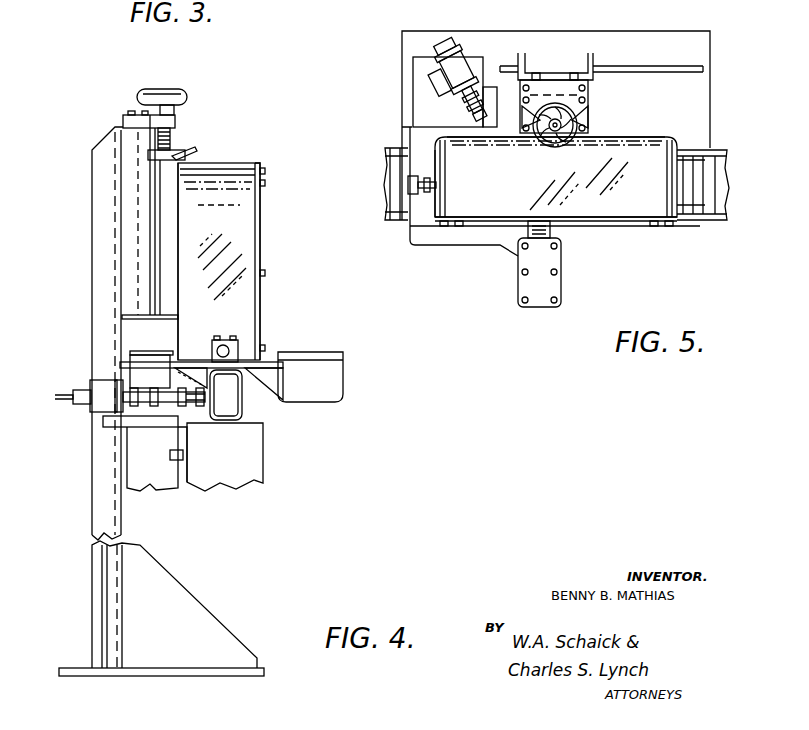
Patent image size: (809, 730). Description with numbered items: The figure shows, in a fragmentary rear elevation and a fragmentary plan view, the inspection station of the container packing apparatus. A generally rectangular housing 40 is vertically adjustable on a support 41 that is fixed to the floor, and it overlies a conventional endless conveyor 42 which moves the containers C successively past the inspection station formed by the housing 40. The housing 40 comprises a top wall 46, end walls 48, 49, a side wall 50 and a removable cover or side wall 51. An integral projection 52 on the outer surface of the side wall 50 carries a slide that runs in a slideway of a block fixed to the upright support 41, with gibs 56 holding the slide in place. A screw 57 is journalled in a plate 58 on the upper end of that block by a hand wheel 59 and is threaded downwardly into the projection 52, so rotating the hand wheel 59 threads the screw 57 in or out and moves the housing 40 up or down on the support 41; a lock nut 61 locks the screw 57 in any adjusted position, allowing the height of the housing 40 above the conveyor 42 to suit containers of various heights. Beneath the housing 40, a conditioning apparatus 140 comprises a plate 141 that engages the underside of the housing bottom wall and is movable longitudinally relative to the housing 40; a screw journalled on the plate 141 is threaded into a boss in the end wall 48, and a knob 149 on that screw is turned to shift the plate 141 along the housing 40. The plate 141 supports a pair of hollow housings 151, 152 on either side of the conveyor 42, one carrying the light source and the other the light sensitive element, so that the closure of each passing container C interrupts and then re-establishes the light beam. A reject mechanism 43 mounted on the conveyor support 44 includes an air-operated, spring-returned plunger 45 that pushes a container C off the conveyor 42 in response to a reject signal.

In FIG. 4, the housing 40 is at (289, 190).
In FIG. 5, the housing 40 is at (577, 217).
In FIG. 4, the support 41 is at (102, 254).
In FIG. 5, the support 41 is at (526, 63).
In FIG. 4, the endless conveyor 42 is at (229, 443).
In FIG. 5, the endless conveyor 42 is at (711, 165).
In FIG. 4, the reject mechanism 43 is at (95, 411).
In FIG. 5, the reject mechanism 43 is at (419, 101).
In FIG. 4, the conveyor support 44 is at (156, 437).
In FIG. 4, the plunger 45 is at (199, 404).
In FIG. 5, the top wall 46 is at (612, 160).
In FIG. 4, the end wall 48 is at (216, 222).
In FIG. 5, the end wall 48 is at (433, 208).
In FIG. 5, the end wall 49 is at (676, 192).
In FIG. 5, the side wall 50 is at (614, 137).
In FIG. 4, the removable cover 51 is at (258, 256).
In FIG. 5, the removable cover 51 is at (615, 222).
In FIG. 4, the projection 52 is at (170, 191).
In FIG. 4, the gibs 56 is at (154, 211).
In FIG. 4, the screw 57 is at (172, 142).
In FIG. 4, the plate 58 is at (125, 121).
In FIG. 5, the plate 58 is at (572, 92).
In FIG. 4, the hand wheel 59 is at (171, 97).
In FIG. 5, the hand wheel 59 is at (579, 122).
In FIG. 4, the lock nut 61 is at (180, 155).
In FIG. 4, the conditioning apparatus 140 is at (292, 372).
In FIG. 5, the conditioning apparatus 140 is at (436, 250).
In FIG. 5, the plate 141 is at (474, 232).
In FIG. 4, the knob 149 is at (236, 343).
In FIG. 5, the knob 149 is at (406, 183).
In FIG. 4, the hollow housing 151 is at (148, 365).
In FIG. 4, the hollow housing 152 is at (305, 368).
In FIG. 5, the hollow housing 152 is at (538, 259).
In FIG. 4, the container C is at (225, 394).